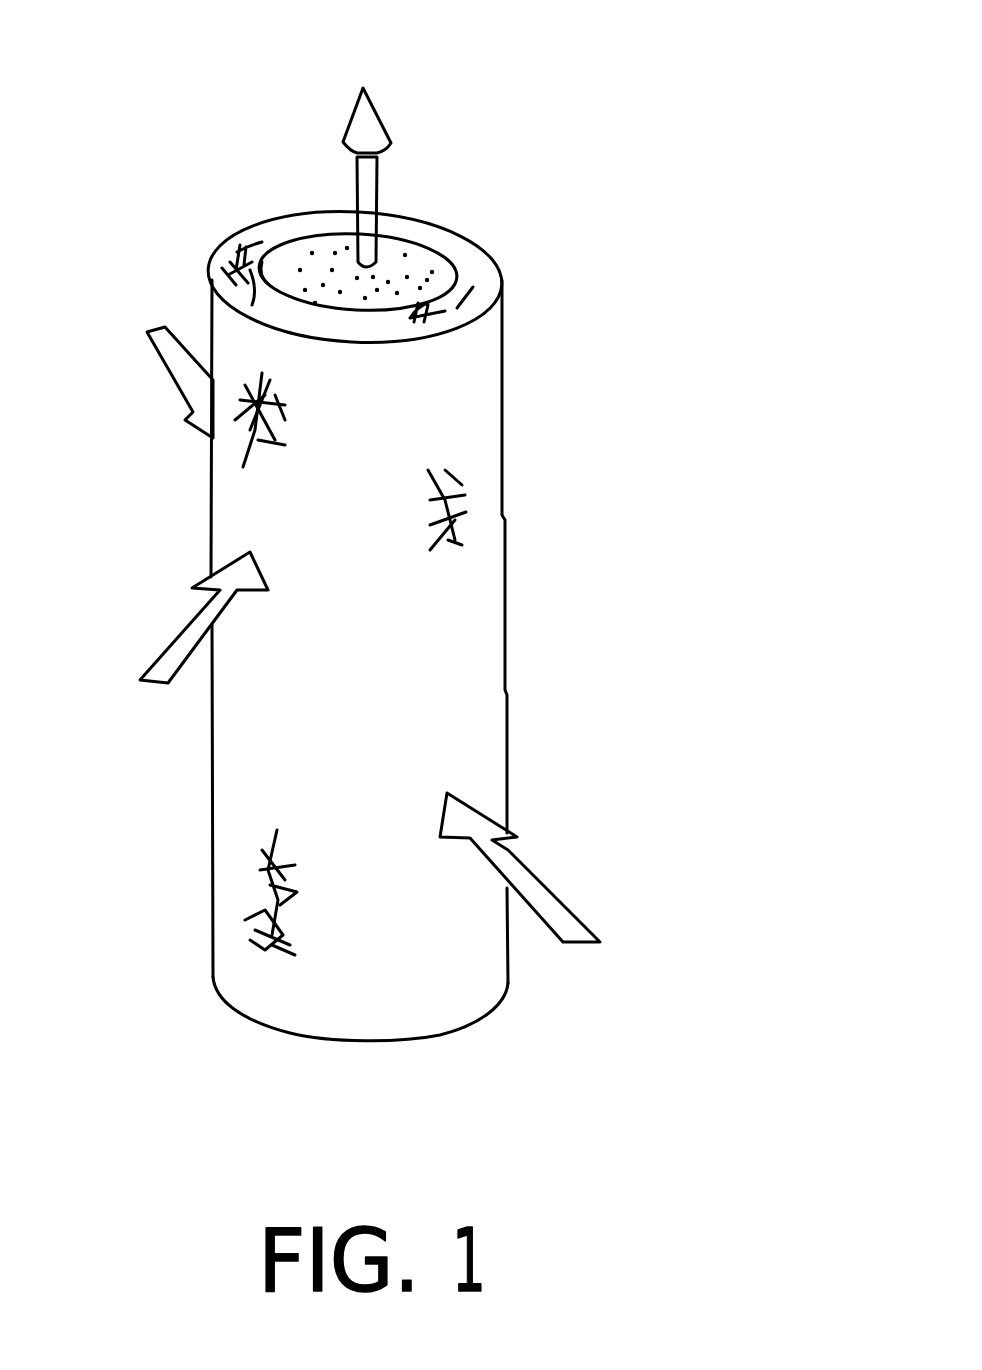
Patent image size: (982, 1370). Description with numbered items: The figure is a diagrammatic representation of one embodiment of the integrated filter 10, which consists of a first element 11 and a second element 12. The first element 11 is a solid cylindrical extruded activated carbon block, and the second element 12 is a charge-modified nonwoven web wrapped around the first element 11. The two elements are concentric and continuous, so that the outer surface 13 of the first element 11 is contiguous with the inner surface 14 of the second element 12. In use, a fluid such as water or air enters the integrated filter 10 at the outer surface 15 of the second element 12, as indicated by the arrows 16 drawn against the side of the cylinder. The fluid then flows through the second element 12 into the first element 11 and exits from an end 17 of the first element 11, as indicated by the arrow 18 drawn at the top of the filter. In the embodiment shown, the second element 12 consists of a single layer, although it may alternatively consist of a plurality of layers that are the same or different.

The integrated filter 10 is at (565, 614).
The first element 11 is at (413, 272).
The second element 12 is at (240, 282).
The outer surface of the first element 13 is at (457, 268).
The inner surface of the second element 14 is at (262, 277).
The outer surface of the second element 15 is at (473, 378).
The arrows 16 is at (183, 370).
The end of the first element 17 is at (387, 267).
The arrow 18 is at (362, 132).